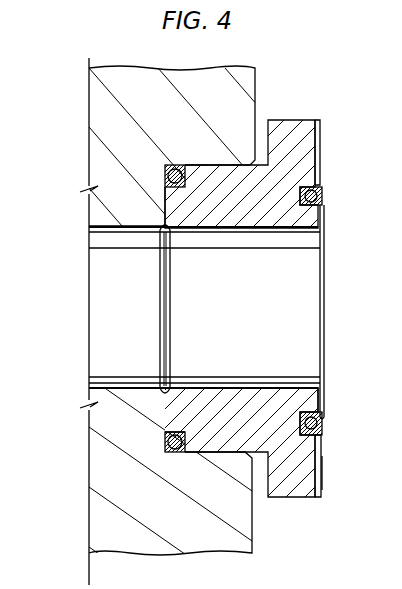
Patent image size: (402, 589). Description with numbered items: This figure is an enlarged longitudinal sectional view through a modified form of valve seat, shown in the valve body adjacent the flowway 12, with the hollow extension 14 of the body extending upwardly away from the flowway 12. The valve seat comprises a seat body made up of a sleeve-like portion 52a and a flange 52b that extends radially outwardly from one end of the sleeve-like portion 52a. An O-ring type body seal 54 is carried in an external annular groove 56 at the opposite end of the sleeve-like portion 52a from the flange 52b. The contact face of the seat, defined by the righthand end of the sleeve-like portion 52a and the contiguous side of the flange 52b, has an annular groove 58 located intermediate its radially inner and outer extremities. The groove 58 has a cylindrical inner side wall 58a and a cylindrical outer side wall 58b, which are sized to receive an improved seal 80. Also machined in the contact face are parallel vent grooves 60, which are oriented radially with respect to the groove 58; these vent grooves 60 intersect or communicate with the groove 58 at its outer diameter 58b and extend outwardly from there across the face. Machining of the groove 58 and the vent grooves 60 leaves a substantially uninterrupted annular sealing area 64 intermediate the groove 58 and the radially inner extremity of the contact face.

The flowway 12 is at (107, 388).
The hollow extension 14 is at (95, 108).
The sleeve-like portion 52a is at (208, 396).
The flange 52b is at (296, 113).
The O-ring type body seal 54 is at (172, 455).
The external annular groove 56 is at (191, 165).
The annular groove 58 is at (293, 200).
The cylindrical inner side wall 58a is at (320, 395).
The cylindrical outer side wall 58b is at (323, 457).
The vent grooves 60 is at (319, 150).
The annular sealing area 64 is at (322, 217).
The improved seal 80 is at (331, 426).